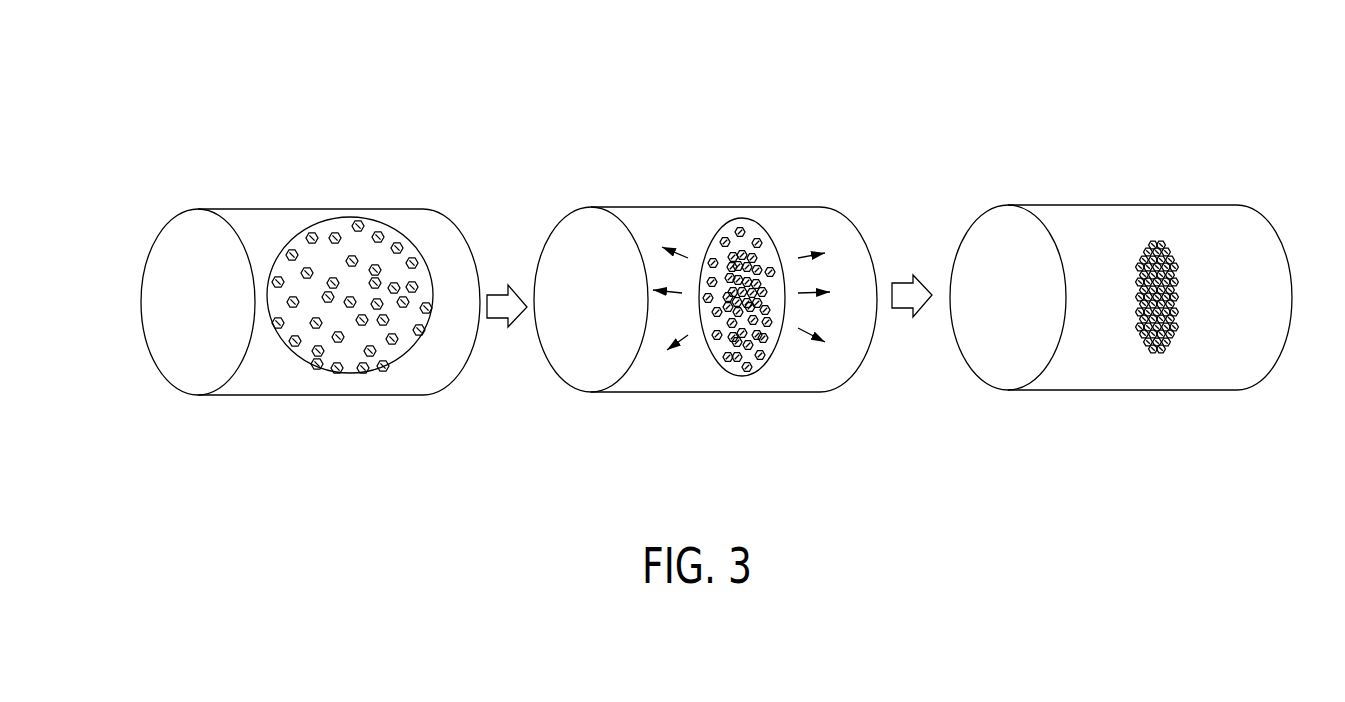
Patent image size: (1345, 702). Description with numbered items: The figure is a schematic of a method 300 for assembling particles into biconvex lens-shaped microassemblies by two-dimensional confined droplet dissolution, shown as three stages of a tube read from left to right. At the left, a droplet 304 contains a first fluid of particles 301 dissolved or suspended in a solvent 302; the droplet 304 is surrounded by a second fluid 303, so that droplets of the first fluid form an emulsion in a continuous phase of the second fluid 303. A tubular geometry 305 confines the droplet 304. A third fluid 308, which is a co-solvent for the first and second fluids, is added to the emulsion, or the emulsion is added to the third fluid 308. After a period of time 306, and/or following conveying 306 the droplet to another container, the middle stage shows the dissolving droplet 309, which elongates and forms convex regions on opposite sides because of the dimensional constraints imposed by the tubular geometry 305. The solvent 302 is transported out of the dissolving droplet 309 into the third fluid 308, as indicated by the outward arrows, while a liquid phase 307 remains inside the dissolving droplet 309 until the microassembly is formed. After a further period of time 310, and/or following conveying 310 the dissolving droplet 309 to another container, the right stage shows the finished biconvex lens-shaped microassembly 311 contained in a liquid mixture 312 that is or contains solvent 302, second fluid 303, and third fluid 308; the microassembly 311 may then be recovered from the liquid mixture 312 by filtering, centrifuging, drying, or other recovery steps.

The method 300 is at (343, 117).
The particles 301 is at (334, 372).
The solvent 302 is at (399, 346).
The second fluid 303 is at (299, 367).
The droplet 304 is at (317, 222).
The tubular geometry 305 is at (249, 209).
The period of time 306 is at (502, 293).
The liquid phase 307 is at (761, 351).
The third fluid 308 is at (651, 367).
The dissolving droplet 309 is at (723, 230).
The period of time 310 is at (900, 282).
The biconvex lens-shaped microassembly 311 is at (1189, 300).
The liquid mixture 312 is at (1104, 366).